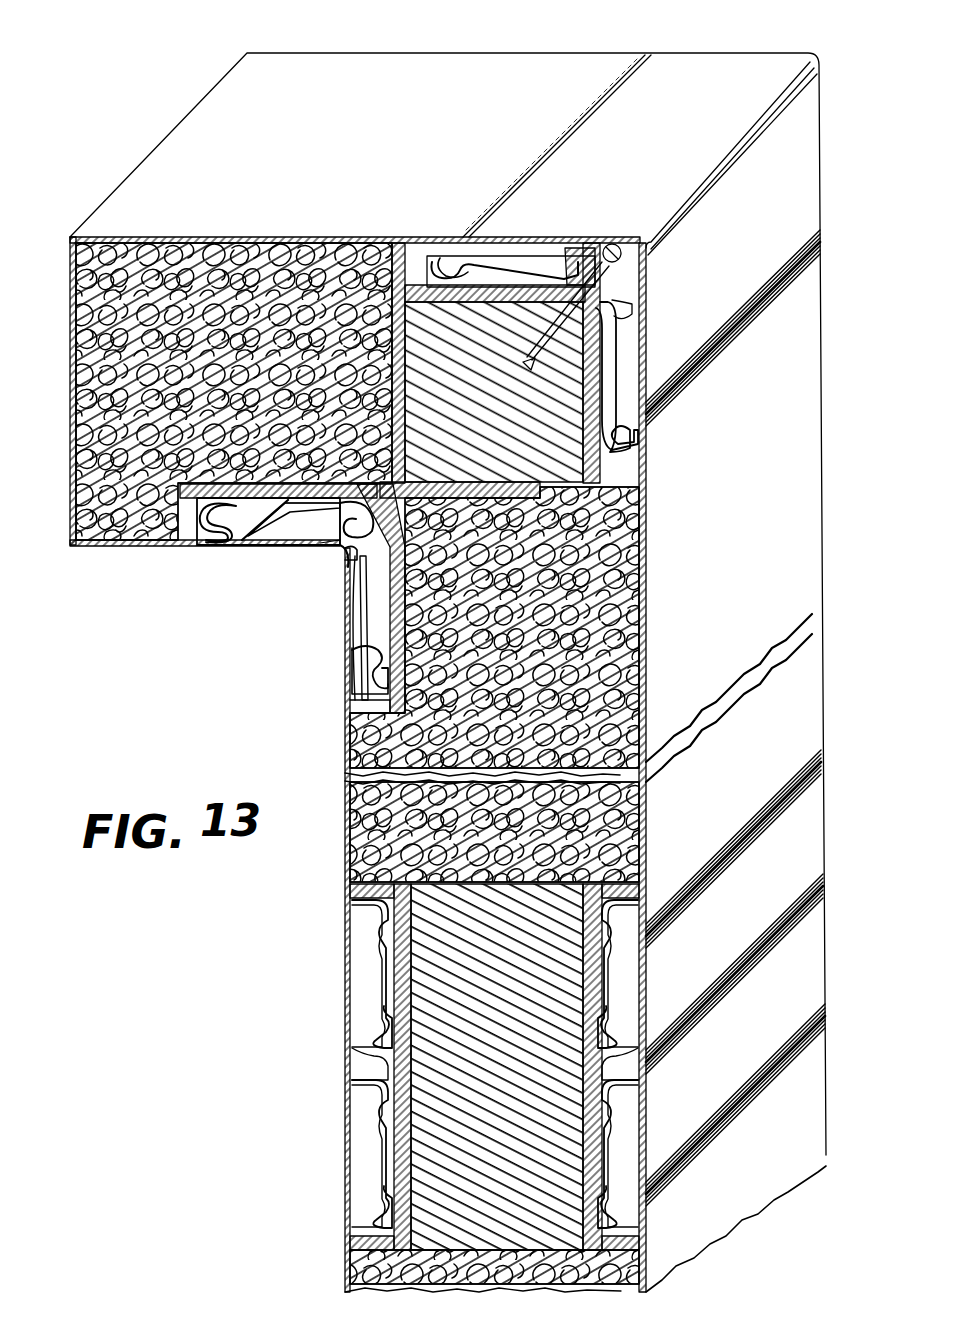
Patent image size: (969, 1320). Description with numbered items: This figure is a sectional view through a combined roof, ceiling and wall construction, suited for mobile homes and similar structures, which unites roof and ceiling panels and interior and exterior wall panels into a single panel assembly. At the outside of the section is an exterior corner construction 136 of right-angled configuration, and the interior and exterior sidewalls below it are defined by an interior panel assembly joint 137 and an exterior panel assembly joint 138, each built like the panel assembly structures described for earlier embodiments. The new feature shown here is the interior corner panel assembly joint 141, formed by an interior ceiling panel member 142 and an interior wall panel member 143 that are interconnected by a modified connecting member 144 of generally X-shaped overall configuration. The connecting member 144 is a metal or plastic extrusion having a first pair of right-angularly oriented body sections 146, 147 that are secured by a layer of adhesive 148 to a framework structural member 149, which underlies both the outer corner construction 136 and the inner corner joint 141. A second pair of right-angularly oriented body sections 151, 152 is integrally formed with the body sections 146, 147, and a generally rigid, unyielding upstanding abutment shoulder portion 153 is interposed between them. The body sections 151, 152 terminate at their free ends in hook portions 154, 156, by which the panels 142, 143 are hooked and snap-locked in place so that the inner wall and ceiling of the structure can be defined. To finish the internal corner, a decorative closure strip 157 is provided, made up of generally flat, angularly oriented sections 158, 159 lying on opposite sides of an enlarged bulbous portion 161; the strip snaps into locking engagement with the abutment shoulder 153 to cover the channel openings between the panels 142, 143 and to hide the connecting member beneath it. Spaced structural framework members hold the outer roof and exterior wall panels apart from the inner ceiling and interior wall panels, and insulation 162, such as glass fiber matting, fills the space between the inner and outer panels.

The exterior corner construction 136 is at (702, 50).
The interior panel assembly joint 137 is at (658, 1097).
The exterior panel assembly joint 138 is at (338, 1008).
The interior corner panel assembly joint 141 is at (256, 606).
The interior ceiling panel member 142 is at (340, 745).
The interior wall panel member 143 is at (94, 548).
The connecting member 144 is at (406, 640).
The first body section 146 is at (392, 392).
The first body section 147 is at (469, 497).
The layer of adhesive 148 is at (410, 424).
The framework structural member 149 is at (398, 325).
The second body section 151 is at (245, 546).
The second body section 152 is at (400, 596).
The abutment shoulder portion 153 is at (340, 512).
The hook portion 154 is at (204, 542).
The hook portion 156 is at (352, 678).
The decorative closure strip 157 is at (334, 660).
The flat angularly oriented section 158 is at (303, 544).
The flat angularly oriented section 159 is at (344, 638).
The bulbous portion 161 is at (350, 570).
The insulation 162 is at (82, 372).